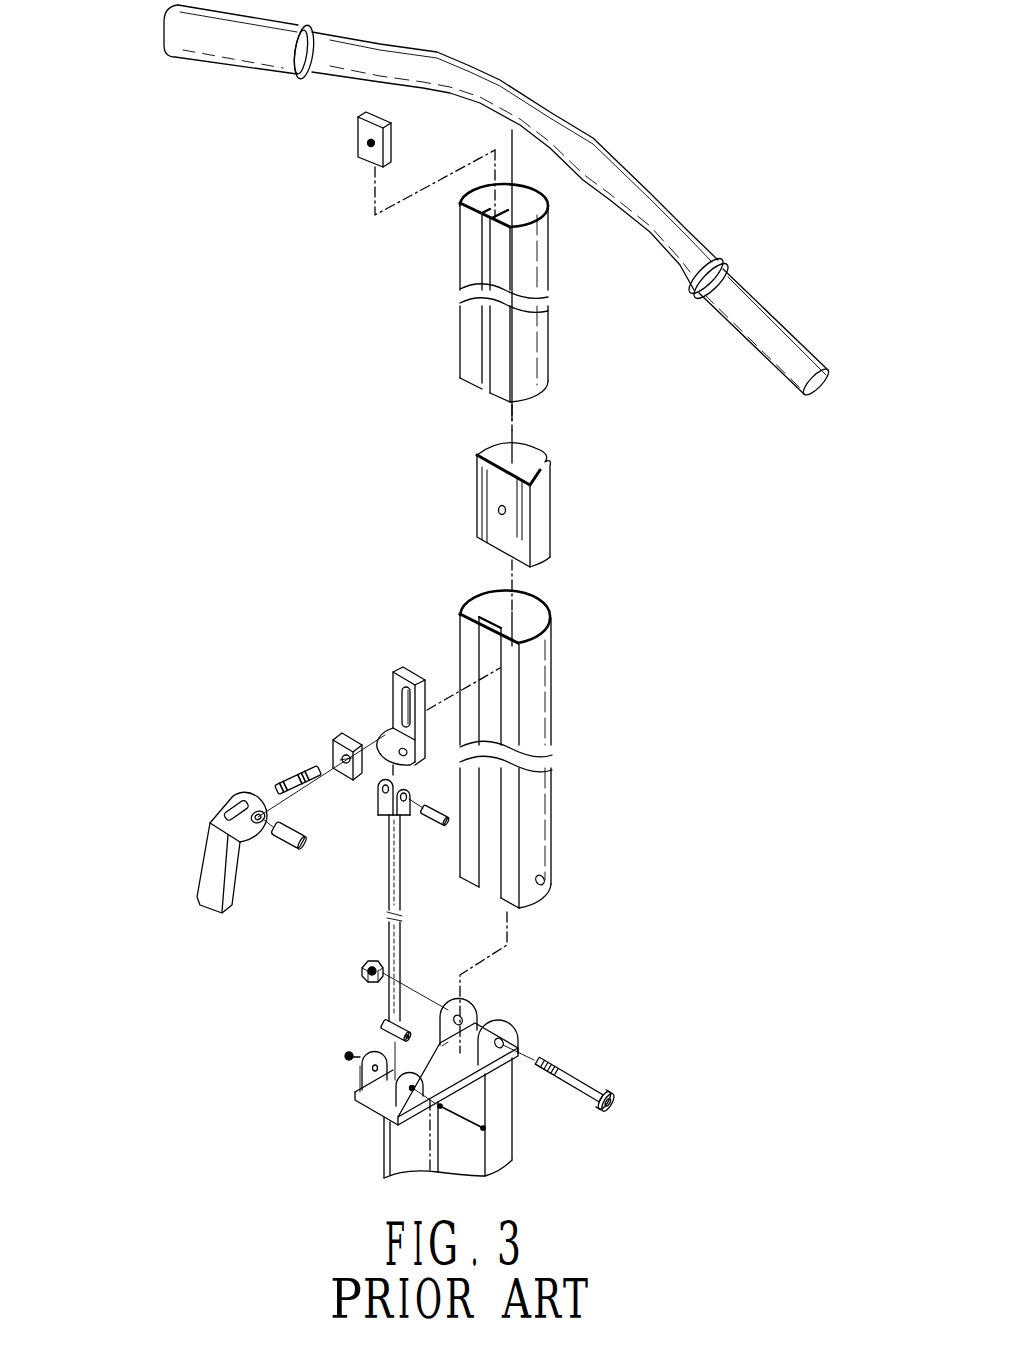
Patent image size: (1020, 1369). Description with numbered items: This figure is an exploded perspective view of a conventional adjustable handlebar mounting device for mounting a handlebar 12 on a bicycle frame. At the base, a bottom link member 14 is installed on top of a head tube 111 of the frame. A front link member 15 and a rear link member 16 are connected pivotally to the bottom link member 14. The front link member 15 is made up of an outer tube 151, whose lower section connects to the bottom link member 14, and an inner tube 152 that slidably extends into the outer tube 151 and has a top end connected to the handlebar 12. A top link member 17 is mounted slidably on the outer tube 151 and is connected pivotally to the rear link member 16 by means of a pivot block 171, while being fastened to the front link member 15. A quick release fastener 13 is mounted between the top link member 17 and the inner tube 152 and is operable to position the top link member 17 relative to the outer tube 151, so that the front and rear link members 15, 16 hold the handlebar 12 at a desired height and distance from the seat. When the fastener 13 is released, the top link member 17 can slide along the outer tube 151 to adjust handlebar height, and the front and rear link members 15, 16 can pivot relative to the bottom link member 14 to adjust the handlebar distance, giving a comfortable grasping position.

The handlebar 12 is at (752, 305).
The inner tube 152 is at (540, 358).
The outer tube 151 is at (545, 650).
The front link member 15 is at (555, 717).
The top link member 17 is at (393, 683).
The pivot block 171 is at (385, 735).
The quick release fastener 13 is at (210, 838).
The rear link member 16 is at (390, 885).
The bottom link member 14 is at (372, 1110).
The head tube 111 is at (503, 1153).